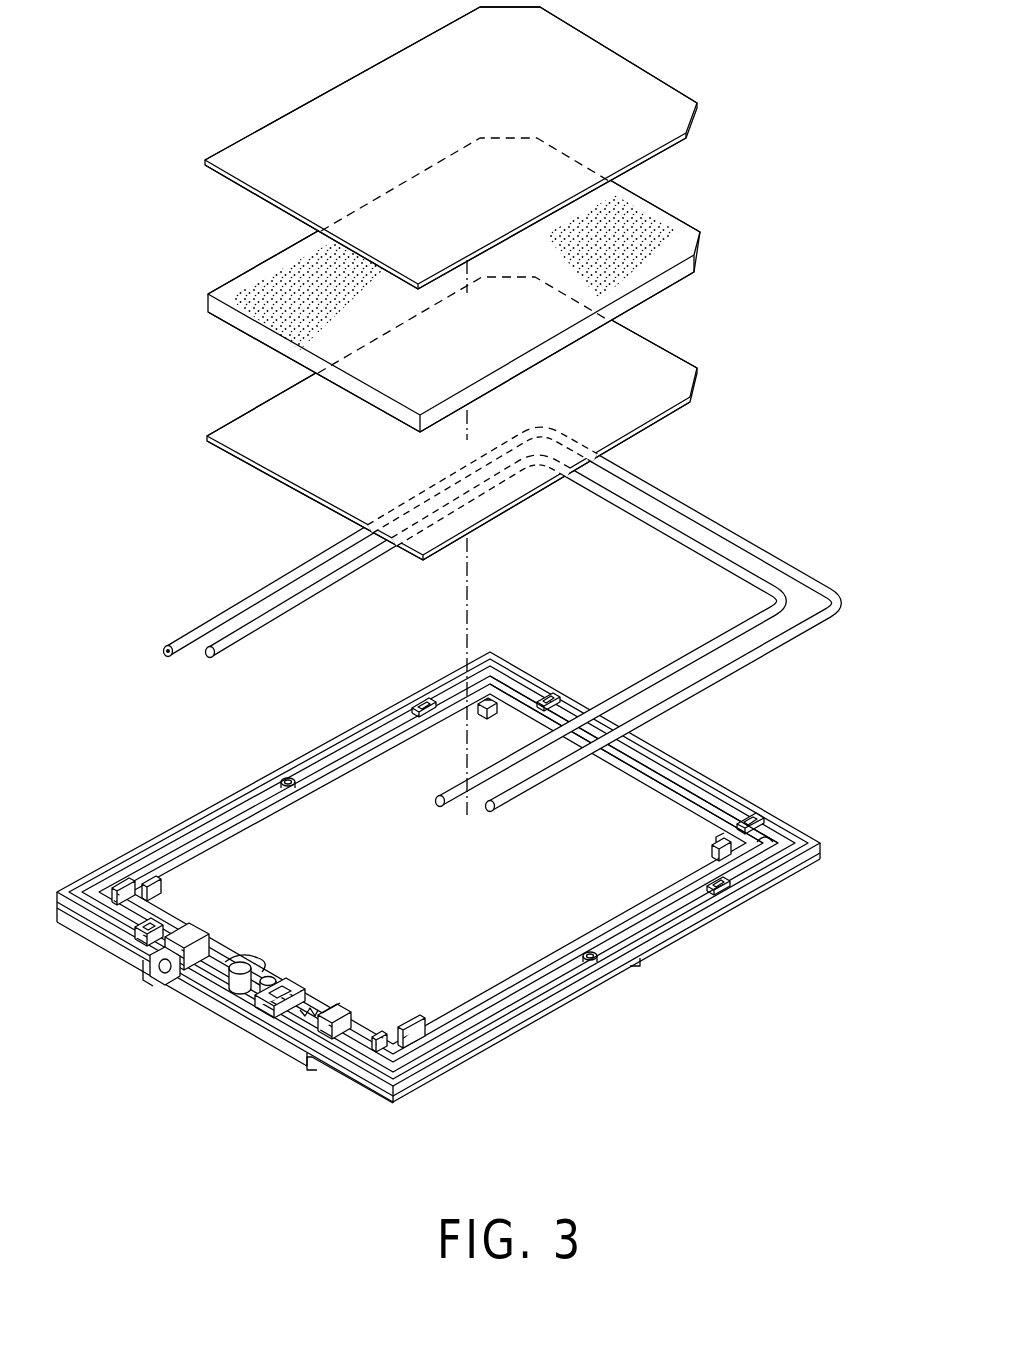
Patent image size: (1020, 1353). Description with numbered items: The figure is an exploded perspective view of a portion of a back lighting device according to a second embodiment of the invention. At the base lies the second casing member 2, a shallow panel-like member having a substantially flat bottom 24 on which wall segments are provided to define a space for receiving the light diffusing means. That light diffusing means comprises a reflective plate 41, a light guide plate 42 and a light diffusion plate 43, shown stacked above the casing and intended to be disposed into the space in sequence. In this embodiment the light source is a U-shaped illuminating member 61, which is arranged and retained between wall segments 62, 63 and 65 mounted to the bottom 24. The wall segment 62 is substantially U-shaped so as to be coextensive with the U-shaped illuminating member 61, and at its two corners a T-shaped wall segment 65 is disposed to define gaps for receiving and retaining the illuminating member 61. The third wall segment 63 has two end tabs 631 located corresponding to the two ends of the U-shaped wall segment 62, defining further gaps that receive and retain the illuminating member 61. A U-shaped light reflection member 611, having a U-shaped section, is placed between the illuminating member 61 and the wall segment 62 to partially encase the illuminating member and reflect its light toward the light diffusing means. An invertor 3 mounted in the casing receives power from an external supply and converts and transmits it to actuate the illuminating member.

The second casing member 2 is at (603, 978).
The invertor 3 is at (280, 995).
The bottom 24 is at (451, 880).
The reflective plate 41 is at (690, 378).
The light guide plate 42 is at (668, 232).
The light diffusion plate 43 is at (657, 98).
The U-shaped illuminating member 61 is at (503, 622).
The U-shaped light reflection member 611 is at (770, 645).
The wall segment 62 is at (693, 807).
The third wall segment 63 is at (187, 912).
The T-shaped wall segment 65 is at (505, 712).
The end tabs 631 is at (140, 887).